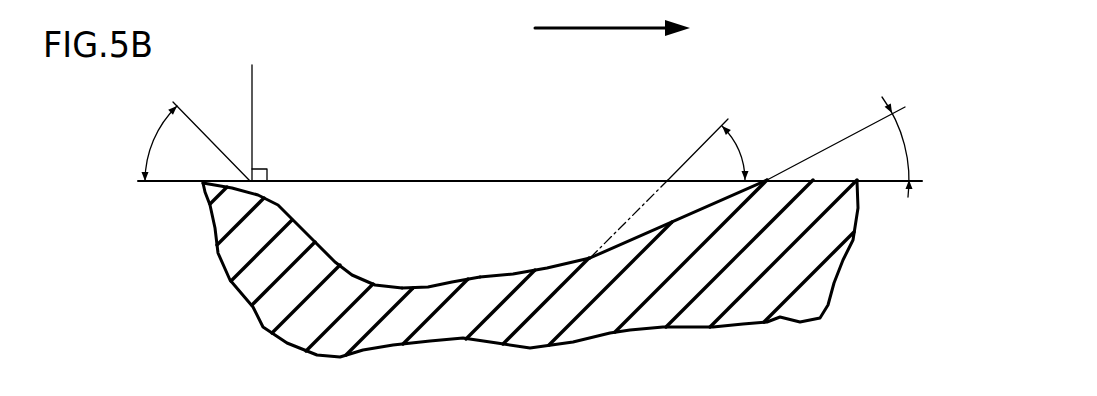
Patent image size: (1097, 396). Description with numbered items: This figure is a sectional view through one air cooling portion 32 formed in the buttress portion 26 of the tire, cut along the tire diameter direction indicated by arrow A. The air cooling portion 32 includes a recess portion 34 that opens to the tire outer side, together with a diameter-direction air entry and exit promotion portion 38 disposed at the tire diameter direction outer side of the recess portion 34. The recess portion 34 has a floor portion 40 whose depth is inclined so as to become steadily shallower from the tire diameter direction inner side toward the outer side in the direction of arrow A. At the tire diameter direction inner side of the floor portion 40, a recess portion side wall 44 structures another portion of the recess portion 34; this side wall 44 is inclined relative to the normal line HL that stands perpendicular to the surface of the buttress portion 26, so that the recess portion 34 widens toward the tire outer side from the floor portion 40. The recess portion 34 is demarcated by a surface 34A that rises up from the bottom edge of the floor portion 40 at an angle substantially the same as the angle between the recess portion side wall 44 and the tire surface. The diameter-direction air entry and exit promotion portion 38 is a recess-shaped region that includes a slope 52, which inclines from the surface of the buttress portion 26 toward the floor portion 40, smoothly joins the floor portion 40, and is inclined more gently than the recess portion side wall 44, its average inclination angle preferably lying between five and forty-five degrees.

The air cooling portion 32 is at (760, 104).
The recess portion side wall 44 is at (310, 243).
The recess portion 34 is at (435, 280).
The floor portion 40 is at (503, 272).
The diameter-direction air entry and exit promotion portion 38 is at (636, 232).
The surface 34A is at (693, 158).
The slope 52 is at (707, 206).
The buttress portion 26 is at (205, 183).
The normal line HL is at (252, 113).
The arrow A is at (612, 53).